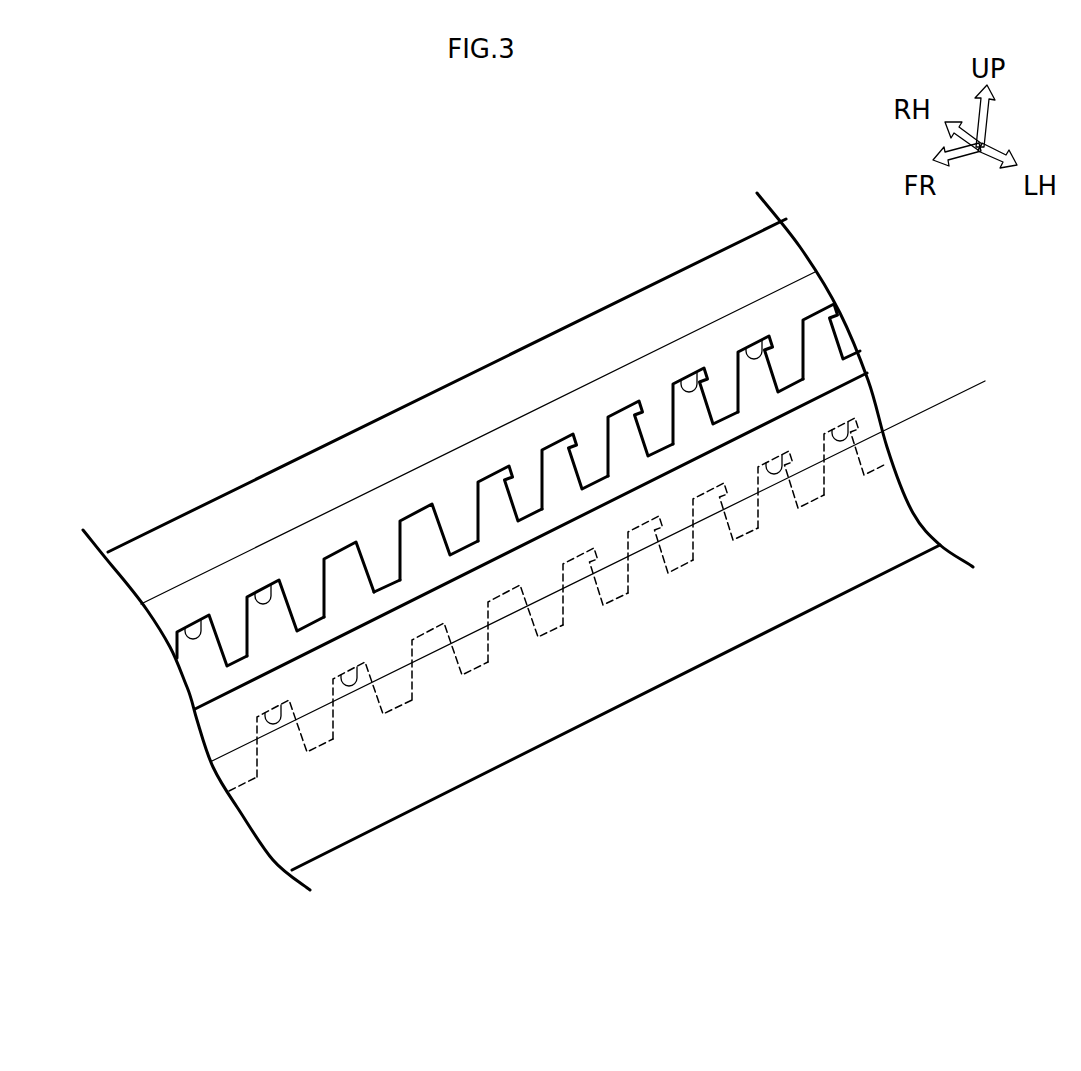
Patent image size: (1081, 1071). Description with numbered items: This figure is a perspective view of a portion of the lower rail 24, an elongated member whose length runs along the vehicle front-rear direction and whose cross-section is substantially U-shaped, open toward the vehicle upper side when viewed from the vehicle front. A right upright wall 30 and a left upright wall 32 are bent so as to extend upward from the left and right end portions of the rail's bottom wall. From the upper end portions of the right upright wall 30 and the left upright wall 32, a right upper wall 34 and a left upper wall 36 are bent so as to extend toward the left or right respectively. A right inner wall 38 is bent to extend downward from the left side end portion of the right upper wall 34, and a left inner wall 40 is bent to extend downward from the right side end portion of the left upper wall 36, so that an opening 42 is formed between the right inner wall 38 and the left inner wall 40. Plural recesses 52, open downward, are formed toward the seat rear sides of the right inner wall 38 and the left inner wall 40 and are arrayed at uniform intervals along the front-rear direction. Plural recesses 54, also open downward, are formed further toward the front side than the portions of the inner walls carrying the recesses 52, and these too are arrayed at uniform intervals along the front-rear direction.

The lower rail 24 is at (323, 290).
The right upright wall 30 is at (298, 458).
The left upright wall 32 is at (678, 633).
The right upper wall 34 is at (387, 433).
The left upper wall 36 is at (397, 653).
The right inner wall 38 is at (518, 464).
The left inner wall 40 is at (680, 510).
The opening 42 is at (302, 565).
The recesses 52 is at (688, 378).
The recesses 54 is at (268, 585).